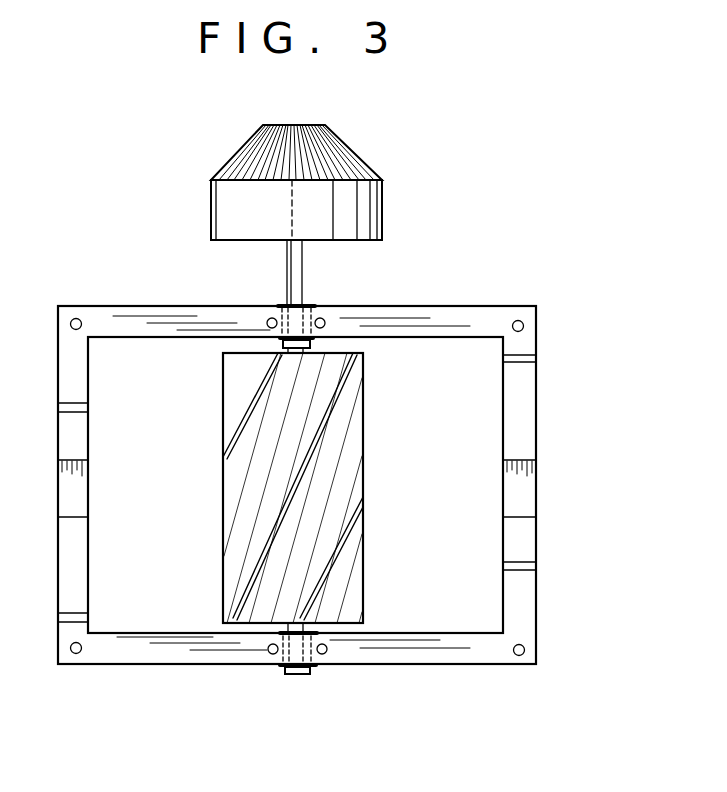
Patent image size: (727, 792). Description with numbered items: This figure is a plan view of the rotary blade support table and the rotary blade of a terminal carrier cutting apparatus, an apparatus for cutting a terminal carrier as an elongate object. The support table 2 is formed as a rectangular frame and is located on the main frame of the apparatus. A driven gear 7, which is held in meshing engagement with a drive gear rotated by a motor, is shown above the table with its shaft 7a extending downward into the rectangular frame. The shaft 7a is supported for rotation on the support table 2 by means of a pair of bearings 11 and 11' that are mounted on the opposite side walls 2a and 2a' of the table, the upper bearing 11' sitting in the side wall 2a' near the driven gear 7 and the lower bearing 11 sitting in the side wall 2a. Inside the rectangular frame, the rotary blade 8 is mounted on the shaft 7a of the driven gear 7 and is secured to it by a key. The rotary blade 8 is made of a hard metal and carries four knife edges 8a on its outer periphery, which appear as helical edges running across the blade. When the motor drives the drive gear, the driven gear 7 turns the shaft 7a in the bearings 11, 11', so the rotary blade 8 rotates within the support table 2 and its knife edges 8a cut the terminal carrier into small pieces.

The rotary blade support table 2 is at (537, 307).
The side wall 2a' is at (305, 281).
The side wall 2a is at (293, 700).
The driven gear 7 is at (385, 178).
The shaft 7a is at (303, 273).
The rotary blade 8 is at (365, 578).
The knife edges 8a is at (283, 503).
The bearing 11' is at (260, 306).
The bearing 11 is at (272, 693).